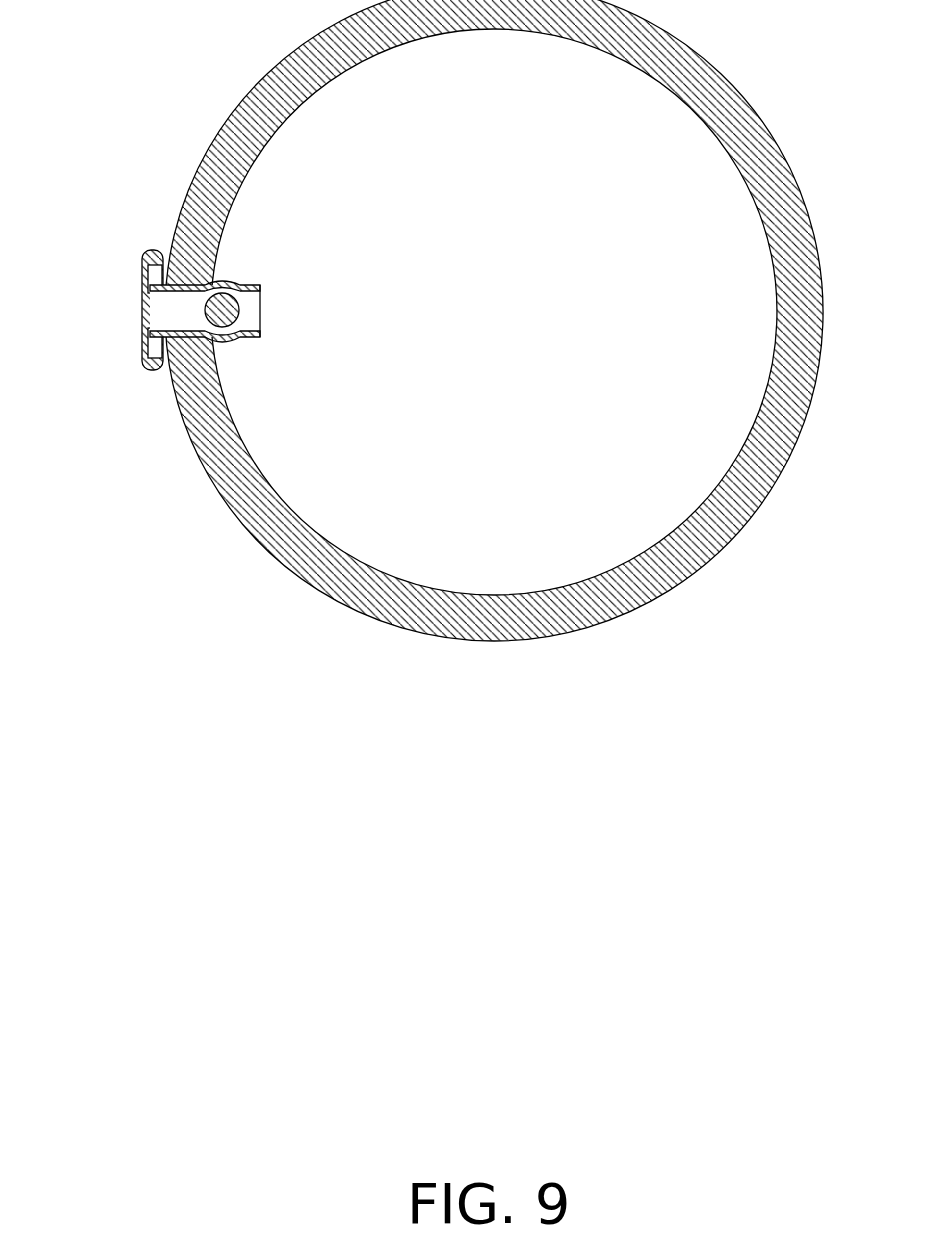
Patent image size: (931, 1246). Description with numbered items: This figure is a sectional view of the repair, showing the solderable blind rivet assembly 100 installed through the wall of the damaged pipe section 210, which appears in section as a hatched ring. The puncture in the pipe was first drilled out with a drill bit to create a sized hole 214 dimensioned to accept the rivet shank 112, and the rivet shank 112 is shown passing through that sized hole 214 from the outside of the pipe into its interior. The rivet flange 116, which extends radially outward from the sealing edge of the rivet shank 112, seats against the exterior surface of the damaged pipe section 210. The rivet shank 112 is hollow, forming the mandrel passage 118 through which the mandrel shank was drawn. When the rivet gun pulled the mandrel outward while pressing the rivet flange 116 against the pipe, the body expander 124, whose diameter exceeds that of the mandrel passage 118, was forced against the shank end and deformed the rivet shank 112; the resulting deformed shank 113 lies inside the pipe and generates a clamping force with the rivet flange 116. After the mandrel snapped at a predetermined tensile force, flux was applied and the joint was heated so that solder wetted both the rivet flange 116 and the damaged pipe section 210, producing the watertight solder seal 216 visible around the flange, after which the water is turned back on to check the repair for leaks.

The damaged pipe section 210 is at (240, 100).
The sized hole 214 is at (185, 265).
The watertight solder seal 216 is at (155, 255).
The solderable blind rivet assembly 100 is at (200, 318).
The rivet shank 112 is at (245, 286).
The deformed shank 113 is at (221, 340).
The mandrel passage 118 is at (250, 315).
The body expander 124 is at (188, 308).
The rivet flange 116 is at (140, 358).